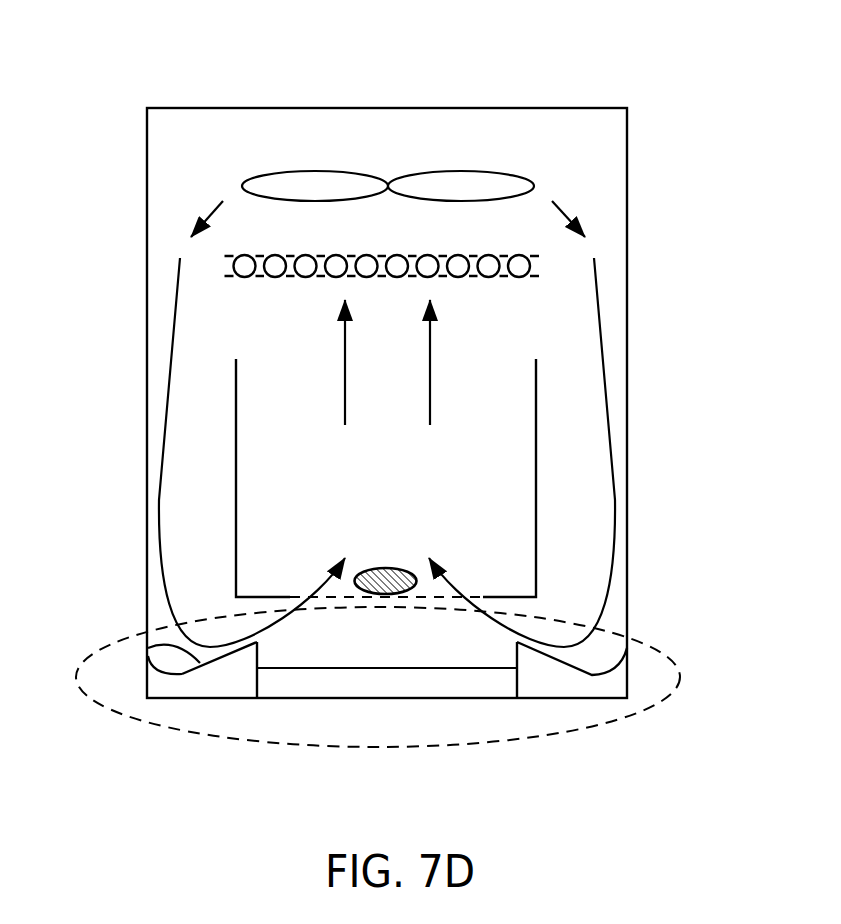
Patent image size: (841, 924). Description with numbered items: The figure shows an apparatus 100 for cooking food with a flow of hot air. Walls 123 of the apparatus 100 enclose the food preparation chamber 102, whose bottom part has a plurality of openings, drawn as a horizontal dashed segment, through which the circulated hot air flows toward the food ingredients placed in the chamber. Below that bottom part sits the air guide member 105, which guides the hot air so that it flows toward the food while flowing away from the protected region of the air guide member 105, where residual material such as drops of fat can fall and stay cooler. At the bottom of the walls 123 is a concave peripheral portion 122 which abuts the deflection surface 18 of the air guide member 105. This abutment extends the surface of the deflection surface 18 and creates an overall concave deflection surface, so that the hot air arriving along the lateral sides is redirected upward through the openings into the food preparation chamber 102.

The apparatus 100 is at (106, 60).
The walls 123 is at (147, 440).
The food preparation chamber 102 is at (536, 441).
The deflection surface 18 is at (148, 646).
The concave peripheral portion 122 is at (165, 671).
The air guide member 105 is at (552, 737).